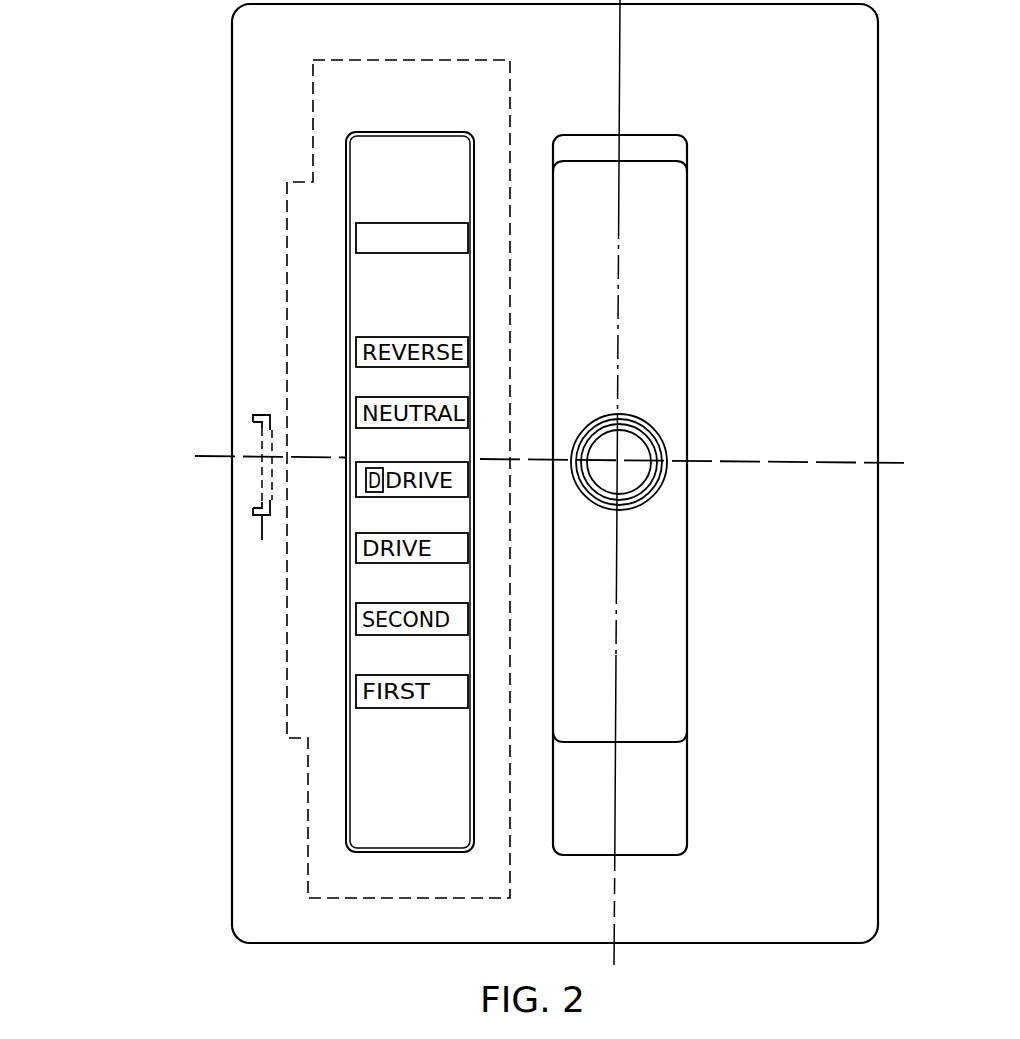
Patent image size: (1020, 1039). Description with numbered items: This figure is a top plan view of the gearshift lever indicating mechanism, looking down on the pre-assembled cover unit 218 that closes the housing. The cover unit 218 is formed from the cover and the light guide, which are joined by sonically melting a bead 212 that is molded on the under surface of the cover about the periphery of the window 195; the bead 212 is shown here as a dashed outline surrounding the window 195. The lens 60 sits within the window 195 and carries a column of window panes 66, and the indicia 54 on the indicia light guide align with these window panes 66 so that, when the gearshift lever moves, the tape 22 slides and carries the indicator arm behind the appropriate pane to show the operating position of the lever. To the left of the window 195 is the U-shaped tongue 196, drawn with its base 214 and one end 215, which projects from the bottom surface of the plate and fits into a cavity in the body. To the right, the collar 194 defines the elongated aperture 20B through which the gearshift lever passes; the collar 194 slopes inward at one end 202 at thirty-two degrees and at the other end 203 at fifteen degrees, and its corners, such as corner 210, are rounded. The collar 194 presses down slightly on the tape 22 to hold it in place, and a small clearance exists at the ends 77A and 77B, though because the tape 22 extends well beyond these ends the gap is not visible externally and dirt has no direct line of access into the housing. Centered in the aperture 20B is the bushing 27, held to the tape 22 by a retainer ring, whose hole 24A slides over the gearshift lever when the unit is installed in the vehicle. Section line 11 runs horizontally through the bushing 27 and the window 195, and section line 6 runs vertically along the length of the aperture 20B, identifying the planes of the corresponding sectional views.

The cover unit 218 is at (220, 940).
The bead 212 is at (345, 60).
The window 195 is at (345, 775).
The lens 60 is at (398, 815).
The indicia 54 is at (377, 200).
The window panes 66 is at (441, 200).
The base of the U 214 is at (277, 433).
The end of the U 215 is at (259, 536).
The tongue 196 is at (272, 492).
The section line 11- 11 is at (195, 456).
The section line 6 is at (614, 963).
The aperture 20B is at (668, 297).
The tape 22 is at (660, 630).
The end of collar 203 is at (680, 152).
The end 77A is at (650, 162).
The end 77B is at (632, 742).
The collar 194 is at (663, 752).
The end of collar 202 is at (665, 789).
The corner 210 is at (680, 850).
The bushing 27 is at (655, 426).
The hole 24A is at (630, 478).